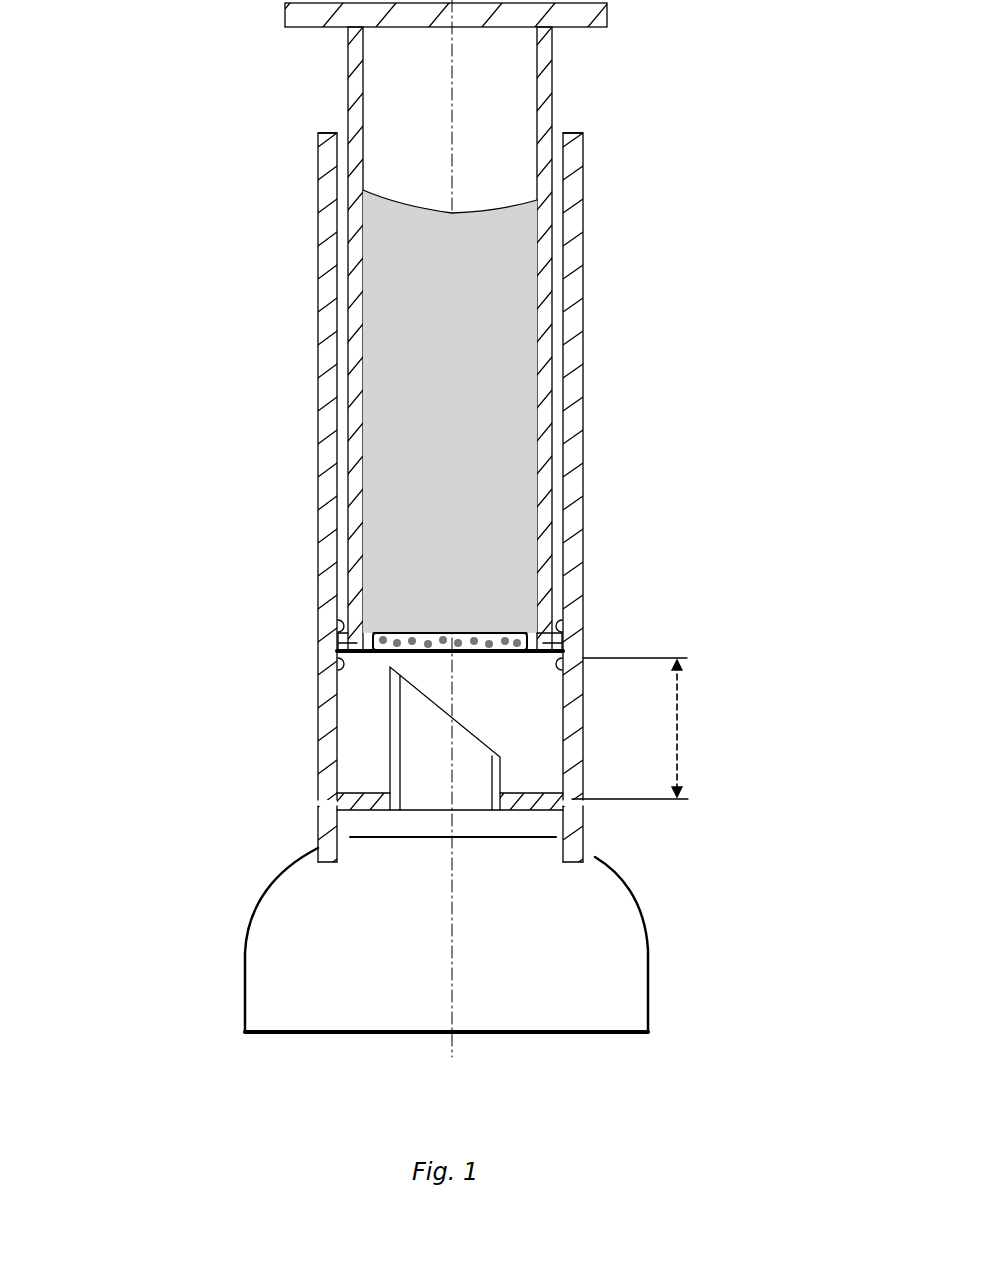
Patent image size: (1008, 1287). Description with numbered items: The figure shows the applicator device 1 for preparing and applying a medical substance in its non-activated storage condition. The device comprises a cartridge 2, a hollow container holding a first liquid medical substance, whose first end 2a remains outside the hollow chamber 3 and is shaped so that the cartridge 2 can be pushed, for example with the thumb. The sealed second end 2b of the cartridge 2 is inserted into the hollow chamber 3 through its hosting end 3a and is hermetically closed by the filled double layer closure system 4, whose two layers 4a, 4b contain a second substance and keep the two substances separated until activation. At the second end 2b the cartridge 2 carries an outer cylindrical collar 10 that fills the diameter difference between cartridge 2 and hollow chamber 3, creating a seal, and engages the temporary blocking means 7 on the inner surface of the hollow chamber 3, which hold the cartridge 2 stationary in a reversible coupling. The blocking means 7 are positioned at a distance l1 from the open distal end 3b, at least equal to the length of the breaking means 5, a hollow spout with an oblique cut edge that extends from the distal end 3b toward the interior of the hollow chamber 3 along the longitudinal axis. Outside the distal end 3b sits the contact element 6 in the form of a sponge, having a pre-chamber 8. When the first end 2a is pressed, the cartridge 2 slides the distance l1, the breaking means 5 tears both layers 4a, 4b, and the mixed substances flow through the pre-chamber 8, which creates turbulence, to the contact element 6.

The applicator device 1 is at (167, 313).
The cartridge 2 is at (348, 68).
The first end 2a is at (276, 18).
The second end 2b is at (305, 669).
The hollow chamber 3 is at (583, 302).
The hosting end 3a is at (597, 138).
The distal end 3b is at (598, 811).
The filled double layer closure system 4 is at (400, 632).
The first layer 4a is at (512, 604).
The second layer 4b is at (370, 672).
The breaking means 5 is at (430, 768).
The contact element 6 is at (540, 978).
The temporary blocking means 7 is at (597, 668).
The pre-chamber 8 is at (523, 840).
The outer cylindrical collar 10 is at (337, 650).
The distance l1 is at (643, 728).